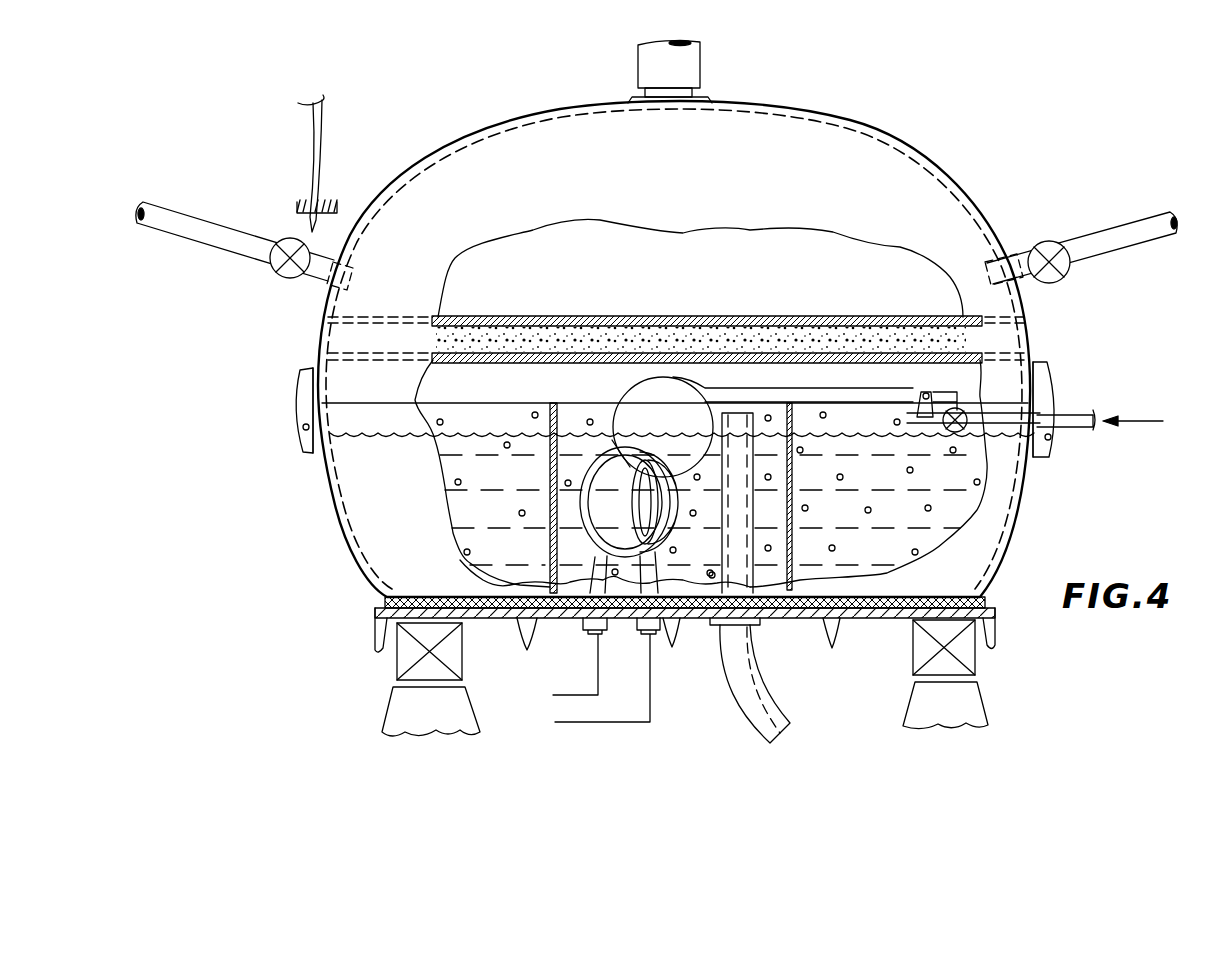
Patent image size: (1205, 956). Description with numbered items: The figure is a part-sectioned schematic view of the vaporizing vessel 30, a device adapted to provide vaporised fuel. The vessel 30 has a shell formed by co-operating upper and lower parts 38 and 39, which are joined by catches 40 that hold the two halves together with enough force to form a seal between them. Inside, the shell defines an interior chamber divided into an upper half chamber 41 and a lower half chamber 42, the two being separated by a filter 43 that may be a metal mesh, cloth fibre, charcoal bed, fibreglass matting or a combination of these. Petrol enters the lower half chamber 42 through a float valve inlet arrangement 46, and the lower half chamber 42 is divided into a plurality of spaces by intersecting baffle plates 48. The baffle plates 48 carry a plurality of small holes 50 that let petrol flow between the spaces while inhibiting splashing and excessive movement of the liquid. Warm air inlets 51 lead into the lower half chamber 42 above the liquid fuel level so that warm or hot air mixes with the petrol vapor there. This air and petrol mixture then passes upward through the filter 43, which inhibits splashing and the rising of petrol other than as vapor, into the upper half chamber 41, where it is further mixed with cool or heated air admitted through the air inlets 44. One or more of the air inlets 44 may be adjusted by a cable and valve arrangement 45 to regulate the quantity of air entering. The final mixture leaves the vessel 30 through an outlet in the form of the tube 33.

The vaporizing vessel 30 is at (930, 141).
The tube 33 is at (690, 70).
The upper part 38 is at (700, 239).
The lower part 39 is at (682, 498).
The catches 40 is at (300, 420).
The upper half chamber 41 is at (701, 288).
The lower half chamber 42 is at (675, 473).
The filter 43 is at (782, 317).
The air inlets 44 is at (222, 247).
The cable and valve arrangement 45 is at (337, 212).
The float valve inlet arrangement 46 is at (910, 383).
The baffle plates 48 is at (647, 516).
The small holes 50 is at (868, 508).
The warm air inlets 51 is at (760, 703).